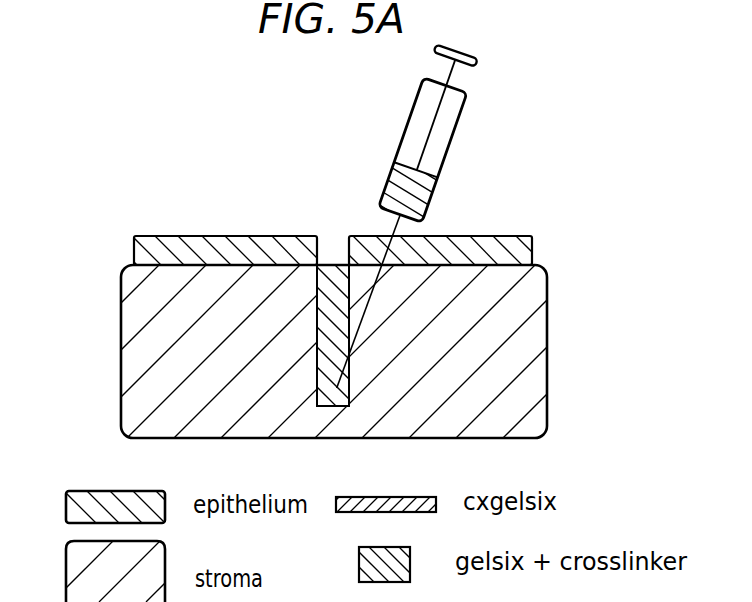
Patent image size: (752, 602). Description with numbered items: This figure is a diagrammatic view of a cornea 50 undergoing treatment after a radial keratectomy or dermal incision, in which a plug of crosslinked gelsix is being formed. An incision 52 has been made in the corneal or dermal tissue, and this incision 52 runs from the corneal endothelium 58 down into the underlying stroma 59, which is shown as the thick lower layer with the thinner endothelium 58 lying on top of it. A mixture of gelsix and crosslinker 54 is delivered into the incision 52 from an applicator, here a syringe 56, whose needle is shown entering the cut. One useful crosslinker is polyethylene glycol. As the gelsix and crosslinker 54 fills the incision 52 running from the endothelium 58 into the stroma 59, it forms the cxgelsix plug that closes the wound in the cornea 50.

The cornea 50 is at (77, 267).
The incision 52 is at (324, 226).
The mixture of gelsix and crosslinker 54 is at (413, 193).
The syringe 56 is at (430, 220).
The corneal endothelium 58 is at (533, 245).
The stroma 59 is at (547, 372).